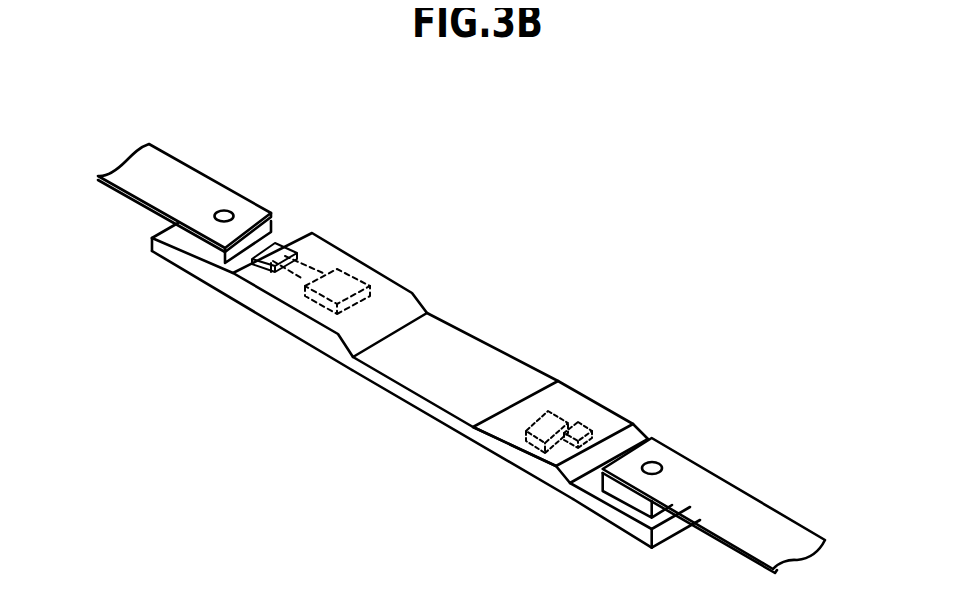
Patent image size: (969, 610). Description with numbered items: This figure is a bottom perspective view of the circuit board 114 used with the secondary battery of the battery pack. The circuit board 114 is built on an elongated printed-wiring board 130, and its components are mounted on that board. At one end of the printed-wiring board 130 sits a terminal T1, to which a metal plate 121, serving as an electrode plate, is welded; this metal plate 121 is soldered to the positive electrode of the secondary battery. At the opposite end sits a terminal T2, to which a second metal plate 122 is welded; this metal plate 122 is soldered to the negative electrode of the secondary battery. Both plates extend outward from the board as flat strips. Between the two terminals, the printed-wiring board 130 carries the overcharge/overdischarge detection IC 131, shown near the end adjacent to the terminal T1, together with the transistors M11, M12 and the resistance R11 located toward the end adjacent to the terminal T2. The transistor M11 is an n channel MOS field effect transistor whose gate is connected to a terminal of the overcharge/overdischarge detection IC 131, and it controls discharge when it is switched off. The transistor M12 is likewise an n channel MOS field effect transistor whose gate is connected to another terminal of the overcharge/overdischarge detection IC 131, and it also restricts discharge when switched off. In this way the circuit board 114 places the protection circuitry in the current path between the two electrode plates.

The circuit board 114 is at (670, 190).
The metal plate 121 is at (178, 170).
The metal plate 122 is at (740, 496).
The printed-wiring board 130 is at (470, 342).
The overcharge/overdischarge detection IC 131 is at (303, 308).
The terminal T1 is at (198, 243).
The terminal T2 is at (627, 493).
The transistor M11 is at (587, 427).
The transistor M12 is at (563, 408).
The resistance R11 is at (515, 457).